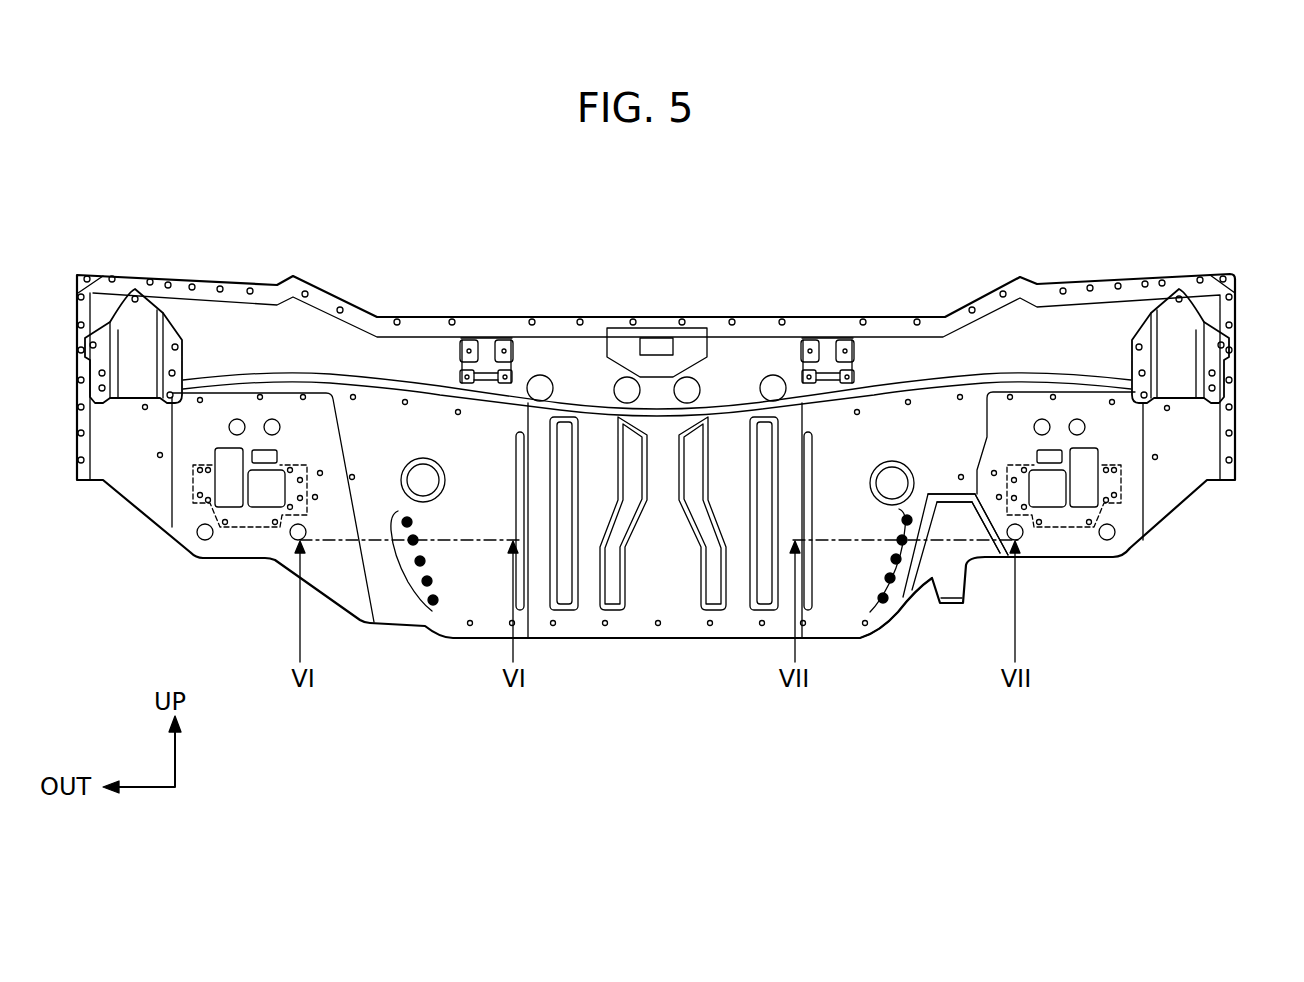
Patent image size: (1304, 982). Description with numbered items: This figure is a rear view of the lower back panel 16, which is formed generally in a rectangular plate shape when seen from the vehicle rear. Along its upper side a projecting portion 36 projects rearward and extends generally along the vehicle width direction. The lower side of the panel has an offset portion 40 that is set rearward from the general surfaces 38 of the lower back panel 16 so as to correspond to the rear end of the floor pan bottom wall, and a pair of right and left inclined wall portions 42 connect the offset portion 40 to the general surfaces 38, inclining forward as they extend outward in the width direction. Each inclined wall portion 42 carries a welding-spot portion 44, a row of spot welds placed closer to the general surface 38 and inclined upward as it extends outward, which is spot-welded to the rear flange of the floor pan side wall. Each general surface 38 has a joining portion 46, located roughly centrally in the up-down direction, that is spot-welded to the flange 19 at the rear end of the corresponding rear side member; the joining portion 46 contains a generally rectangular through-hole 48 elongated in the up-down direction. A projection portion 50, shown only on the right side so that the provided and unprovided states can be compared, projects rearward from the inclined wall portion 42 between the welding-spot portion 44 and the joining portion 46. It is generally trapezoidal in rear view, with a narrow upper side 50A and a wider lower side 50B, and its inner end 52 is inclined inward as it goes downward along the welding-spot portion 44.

The lower back panel 16 is at (1126, 257).
The flange 19 is at (268, 517).
The projecting portion 36 is at (893, 352).
The general surfaces 38 is at (128, 467).
The offset portion 40 is at (662, 588).
The inclined wall portions 42 is at (478, 510).
The welding-spot portion 44 is at (404, 563).
The joining portion 46 is at (242, 523).
The through-hole 48 is at (218, 491).
The projection portion 50 is at (948, 527).
The upper side 50A is at (962, 513).
The lower side 50B is at (973, 557).
The inner end 52 is at (925, 558).